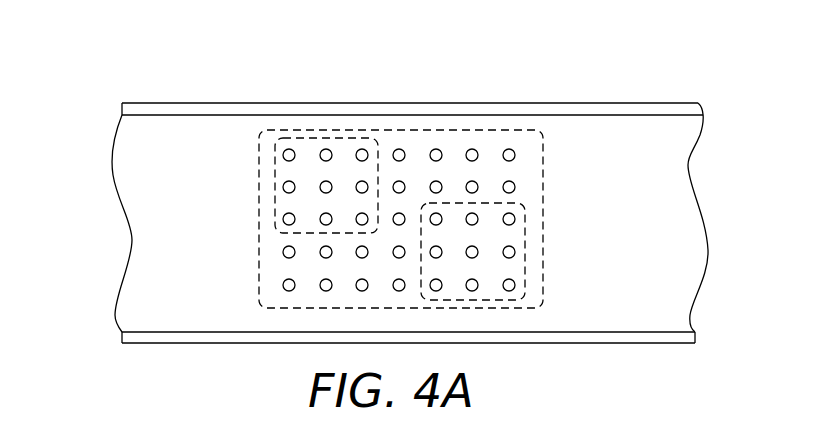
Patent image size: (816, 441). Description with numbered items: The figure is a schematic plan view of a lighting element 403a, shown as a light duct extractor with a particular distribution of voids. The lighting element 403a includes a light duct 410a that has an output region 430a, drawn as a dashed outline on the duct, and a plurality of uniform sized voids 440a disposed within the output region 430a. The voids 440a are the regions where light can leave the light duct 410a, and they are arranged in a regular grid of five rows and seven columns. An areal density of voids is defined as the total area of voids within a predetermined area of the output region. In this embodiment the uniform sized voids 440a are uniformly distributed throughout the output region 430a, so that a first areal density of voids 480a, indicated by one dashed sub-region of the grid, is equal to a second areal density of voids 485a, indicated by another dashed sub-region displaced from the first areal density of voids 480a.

The lighting element 403a is at (123, 80).
The light duct 410a is at (650, 343).
The output region 430a is at (507, 130).
The uniform sized voids 440a is at (516, 184).
The first areal density of voids 480a is at (317, 140).
The second areal density of voids 485a is at (525, 270).